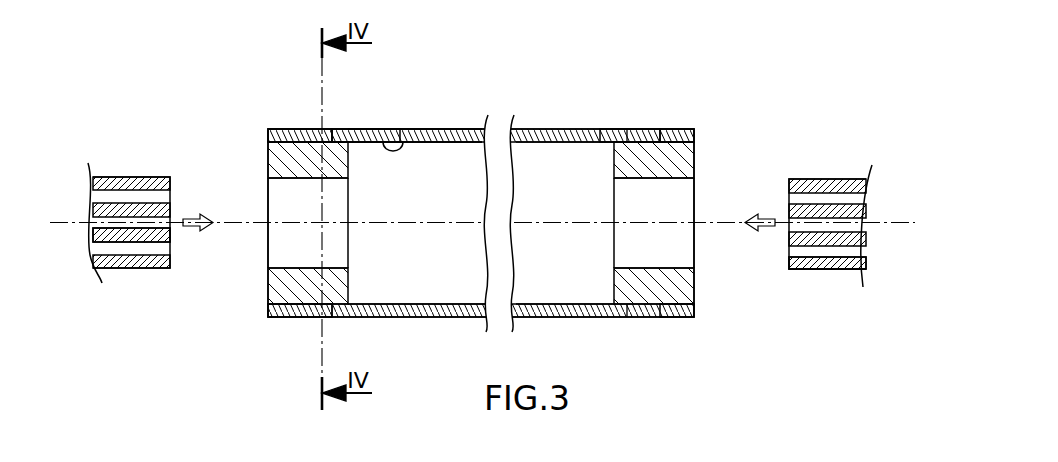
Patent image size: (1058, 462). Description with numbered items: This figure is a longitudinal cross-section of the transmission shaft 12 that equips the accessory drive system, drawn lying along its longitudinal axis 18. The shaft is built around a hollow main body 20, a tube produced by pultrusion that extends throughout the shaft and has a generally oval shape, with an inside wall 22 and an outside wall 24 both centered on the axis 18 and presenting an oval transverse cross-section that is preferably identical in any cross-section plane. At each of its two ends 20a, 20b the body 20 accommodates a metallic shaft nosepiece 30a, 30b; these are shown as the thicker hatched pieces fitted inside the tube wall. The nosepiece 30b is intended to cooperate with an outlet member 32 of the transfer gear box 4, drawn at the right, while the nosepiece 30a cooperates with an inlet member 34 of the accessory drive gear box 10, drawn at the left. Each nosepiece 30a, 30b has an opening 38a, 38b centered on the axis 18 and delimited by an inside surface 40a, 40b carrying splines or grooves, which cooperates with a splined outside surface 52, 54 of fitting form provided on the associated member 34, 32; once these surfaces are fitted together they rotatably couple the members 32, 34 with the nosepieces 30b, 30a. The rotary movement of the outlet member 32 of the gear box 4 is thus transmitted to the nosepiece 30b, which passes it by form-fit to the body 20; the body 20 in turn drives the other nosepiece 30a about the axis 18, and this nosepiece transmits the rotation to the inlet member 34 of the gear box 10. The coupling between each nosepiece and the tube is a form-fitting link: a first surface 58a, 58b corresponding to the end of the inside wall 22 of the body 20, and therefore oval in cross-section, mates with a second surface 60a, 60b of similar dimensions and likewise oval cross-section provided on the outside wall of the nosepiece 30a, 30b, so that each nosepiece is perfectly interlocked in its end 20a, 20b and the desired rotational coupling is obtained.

The transfer gear box 4 is at (825, 110).
The accessory drive gear box 10 is at (112, 109).
The transmission shaft 12 is at (435, 104).
The longitudinal axis 18 is at (541, 222).
The hollow main body 20 is at (530, 129).
The first end of the main body 20a is at (272, 129).
The second end of the main body 20b is at (674, 129).
The inside wall 22 is at (393, 141).
The outside wall 24 is at (458, 129).
The first shaft nosepiece 30a is at (265, 166).
The second shaft nosepiece 30b is at (696, 166).
The outlet member 32 is at (842, 179).
The inlet member 34 is at (130, 178).
The first opening 38a is at (280, 245).
The second opening 38b is at (685, 245).
The first inside surface 40a is at (272, 179).
The second inside surface 40b is at (683, 179).
The outside surface of the inlet member 52 is at (127, 240).
The outside surface of the outlet member 54 is at (818, 262).
The first surface 58a is at (268, 146).
The first surface of the second end 58b is at (684, 146).
The second surface 60a is at (333, 129).
The second surface of the second nosepiece 60b is at (628, 129).